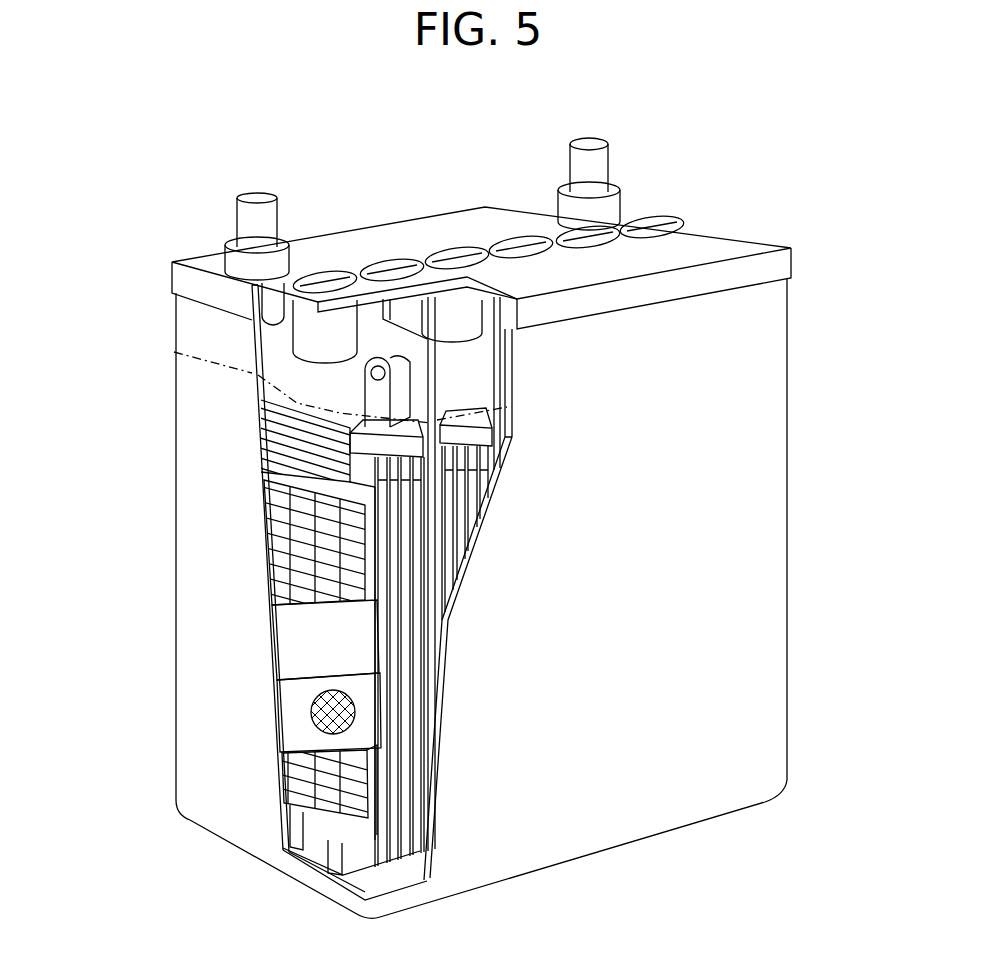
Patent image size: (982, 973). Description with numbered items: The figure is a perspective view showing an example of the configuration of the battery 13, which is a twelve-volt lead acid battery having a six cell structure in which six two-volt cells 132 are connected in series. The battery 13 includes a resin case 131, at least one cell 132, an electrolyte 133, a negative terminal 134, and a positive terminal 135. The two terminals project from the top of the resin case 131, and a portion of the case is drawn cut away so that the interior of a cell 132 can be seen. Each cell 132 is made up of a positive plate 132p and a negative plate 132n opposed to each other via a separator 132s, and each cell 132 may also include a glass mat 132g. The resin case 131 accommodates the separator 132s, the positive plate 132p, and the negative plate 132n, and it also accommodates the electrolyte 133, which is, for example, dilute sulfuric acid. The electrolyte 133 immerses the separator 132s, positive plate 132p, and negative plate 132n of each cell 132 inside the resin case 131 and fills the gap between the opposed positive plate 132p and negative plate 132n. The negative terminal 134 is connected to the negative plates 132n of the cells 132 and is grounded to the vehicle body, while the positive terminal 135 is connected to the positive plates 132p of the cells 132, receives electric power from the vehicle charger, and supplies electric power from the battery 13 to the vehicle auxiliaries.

The battery 13 is at (338, 146).
The resin case 131 is at (707, 643).
The cell 132 is at (329, 383).
The negative plate 132n is at (307, 537).
The separator 132s is at (303, 640).
The glass mat 132g is at (313, 732).
The positive plate 132p is at (333, 790).
The electrolyte 133 is at (174, 352).
The negative terminal 134 is at (589, 138).
The positive terminal 135 is at (257, 197).